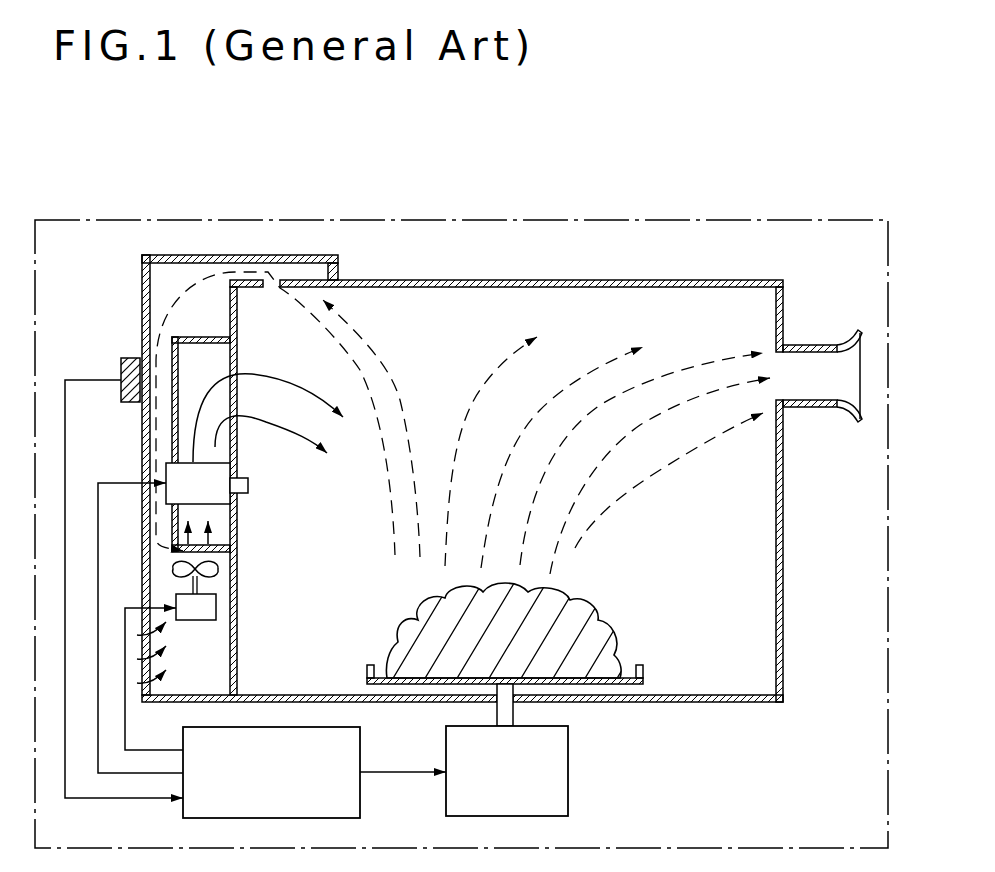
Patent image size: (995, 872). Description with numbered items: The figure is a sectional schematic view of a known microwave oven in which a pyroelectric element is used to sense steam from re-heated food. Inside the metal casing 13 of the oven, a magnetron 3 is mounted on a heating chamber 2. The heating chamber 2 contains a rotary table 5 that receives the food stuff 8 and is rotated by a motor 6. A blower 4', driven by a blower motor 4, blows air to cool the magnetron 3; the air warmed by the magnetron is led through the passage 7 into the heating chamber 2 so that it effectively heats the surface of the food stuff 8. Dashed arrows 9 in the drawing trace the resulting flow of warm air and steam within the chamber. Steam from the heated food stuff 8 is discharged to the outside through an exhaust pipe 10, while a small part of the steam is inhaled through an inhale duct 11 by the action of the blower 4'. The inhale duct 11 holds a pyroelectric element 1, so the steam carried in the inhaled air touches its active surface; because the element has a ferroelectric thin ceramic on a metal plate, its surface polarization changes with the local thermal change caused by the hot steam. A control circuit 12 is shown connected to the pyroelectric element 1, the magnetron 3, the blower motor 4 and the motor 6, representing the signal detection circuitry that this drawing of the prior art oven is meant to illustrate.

The pyroelectric element 1 is at (118, 358).
The heating chamber 2 is at (650, 280).
The magnetron 3 is at (210, 490).
The blower motor 4 is at (196, 630).
The blower 4' is at (229, 569).
The rotary table 5 is at (643, 676).
The motor 6 is at (569, 746).
The hot air duct 7 is at (202, 368).
The food stuff 8 is at (608, 612).
The hot air flow 9 is at (640, 488).
The exhaust pipe 10 is at (812, 360).
The inhale duct 11 is at (163, 283).
The control circuit 12 is at (362, 740).
The metal casing 13 is at (653, 220).